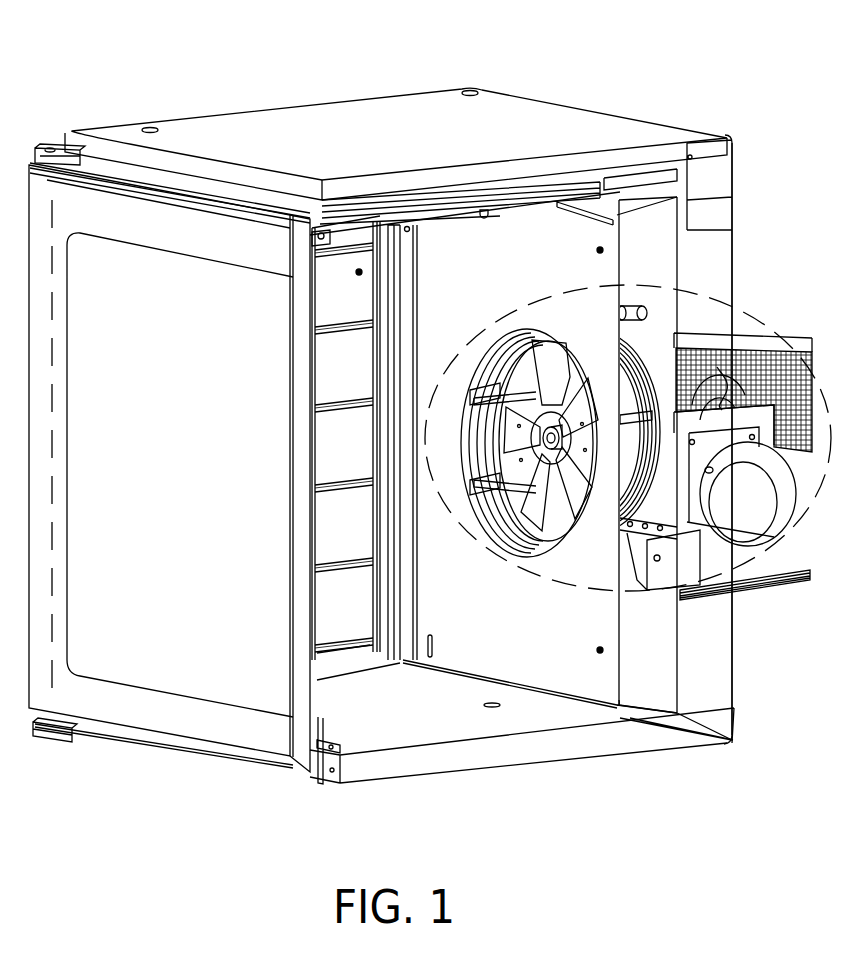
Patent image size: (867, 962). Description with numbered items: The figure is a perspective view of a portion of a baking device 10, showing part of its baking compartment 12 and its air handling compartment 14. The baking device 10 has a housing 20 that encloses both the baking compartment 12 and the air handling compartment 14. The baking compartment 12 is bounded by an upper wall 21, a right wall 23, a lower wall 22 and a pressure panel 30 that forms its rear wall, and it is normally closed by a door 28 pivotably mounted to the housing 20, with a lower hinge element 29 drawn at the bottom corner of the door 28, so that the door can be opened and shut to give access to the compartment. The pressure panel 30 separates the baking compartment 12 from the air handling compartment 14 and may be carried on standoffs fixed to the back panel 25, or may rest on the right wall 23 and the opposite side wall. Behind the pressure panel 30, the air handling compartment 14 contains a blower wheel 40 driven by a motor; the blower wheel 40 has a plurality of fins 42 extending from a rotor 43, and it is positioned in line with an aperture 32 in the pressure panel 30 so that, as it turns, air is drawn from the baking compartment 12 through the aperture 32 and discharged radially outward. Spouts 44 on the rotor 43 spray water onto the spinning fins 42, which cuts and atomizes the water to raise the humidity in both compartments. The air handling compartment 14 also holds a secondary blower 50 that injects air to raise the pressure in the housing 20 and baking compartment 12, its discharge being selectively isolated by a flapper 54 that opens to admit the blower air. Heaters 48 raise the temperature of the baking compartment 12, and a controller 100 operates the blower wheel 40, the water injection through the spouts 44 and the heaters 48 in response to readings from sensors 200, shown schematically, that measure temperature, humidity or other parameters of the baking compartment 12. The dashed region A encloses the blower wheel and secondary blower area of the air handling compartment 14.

The baking device 10 is at (766, 82).
The baking compartment 12 is at (507, 272).
The air handling compartment 14 is at (653, 222).
The housing 20 is at (226, 133).
The upper wall 21 is at (565, 205).
The lower wall 22 is at (447, 730).
The right wall 23 is at (333, 303).
The back panel 25 is at (658, 242).
The door 28 is at (166, 705).
The lower hinge 29 is at (42, 742).
The pressure panel 30 is at (590, 660).
The aperture 32 is at (495, 425).
The blower wheel 40 is at (560, 420).
The fins 42 is at (527, 328).
The rotor 43 is at (543, 535).
The spouts 44 is at (567, 465).
The heaters 48 is at (637, 582).
The secondary blower 50 is at (775, 542).
The flapper 54 is at (745, 590).
The controller 100 is at (713, 193).
The sensors 200 is at (359, 272).
The detail region A is at (768, 330).